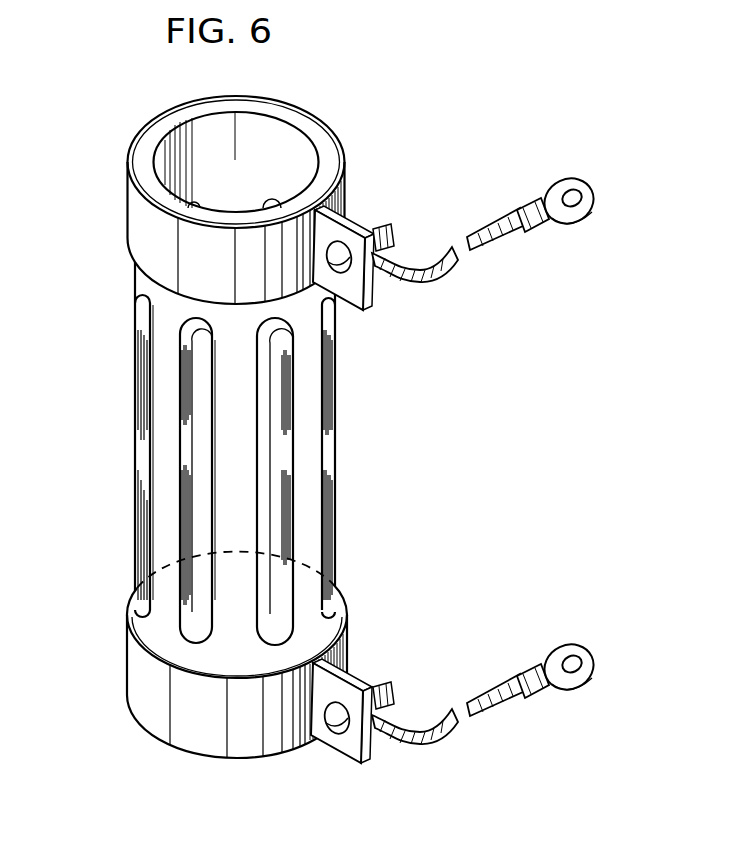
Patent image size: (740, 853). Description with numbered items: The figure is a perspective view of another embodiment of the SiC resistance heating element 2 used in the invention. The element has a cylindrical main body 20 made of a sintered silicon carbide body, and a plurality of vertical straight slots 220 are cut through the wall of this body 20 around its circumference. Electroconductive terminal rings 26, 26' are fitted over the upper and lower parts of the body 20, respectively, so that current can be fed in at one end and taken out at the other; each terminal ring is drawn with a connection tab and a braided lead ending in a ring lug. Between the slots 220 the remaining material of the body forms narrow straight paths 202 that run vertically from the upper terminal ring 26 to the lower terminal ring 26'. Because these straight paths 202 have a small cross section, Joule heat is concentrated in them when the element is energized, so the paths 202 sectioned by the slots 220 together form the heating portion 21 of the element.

The SiC resistance heating element 2 is at (375, 478).
The cylindrical main body 20 is at (137, 287).
The heating portion 21 is at (345, 602).
The straight paths 202 is at (300, 400).
The vertical straight slots 220 is at (200, 527).
The electroconductive terminal ring 26 is at (334, 203).
The electroconductive terminal ring 26' is at (334, 657).